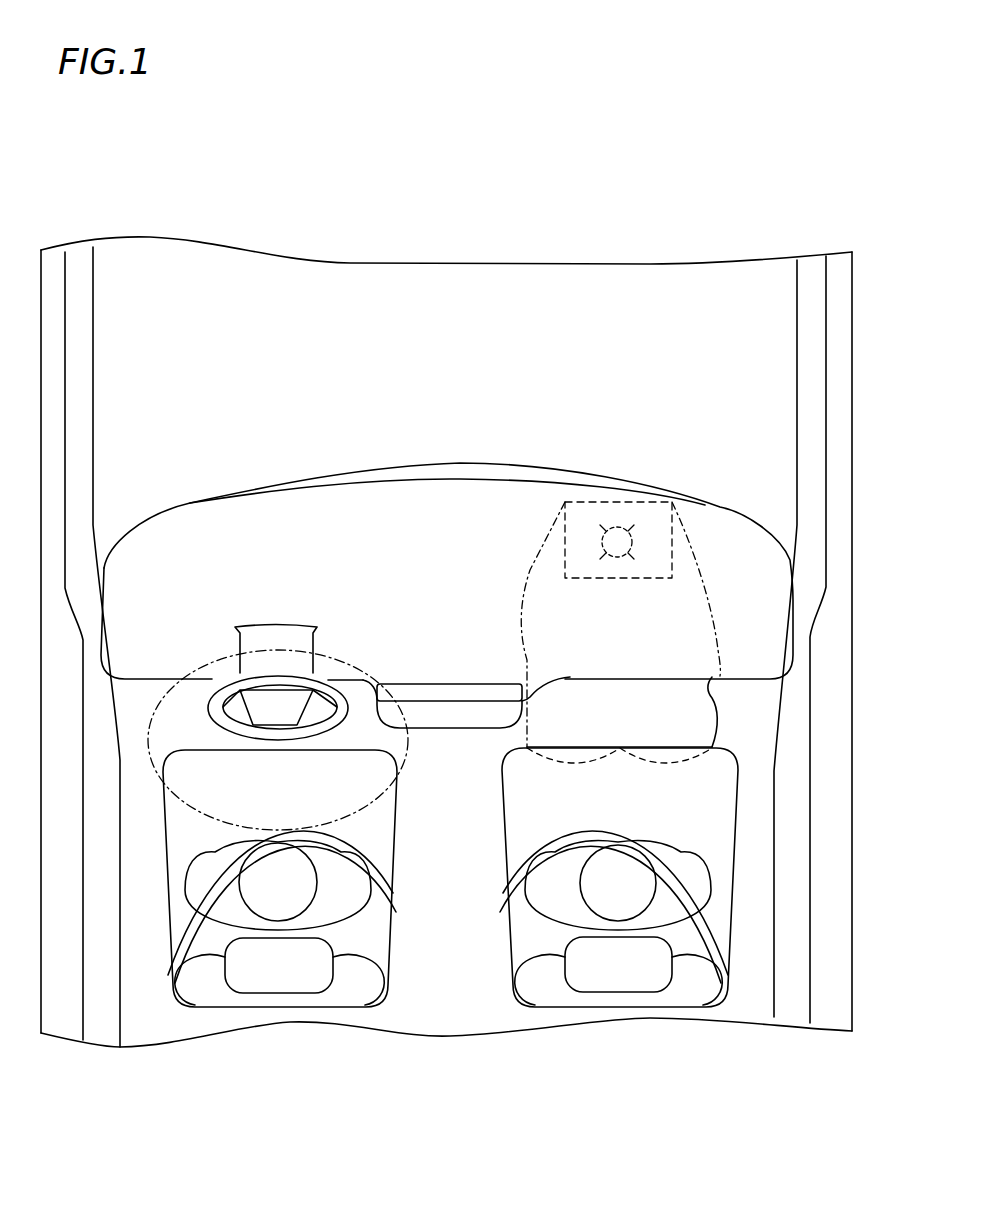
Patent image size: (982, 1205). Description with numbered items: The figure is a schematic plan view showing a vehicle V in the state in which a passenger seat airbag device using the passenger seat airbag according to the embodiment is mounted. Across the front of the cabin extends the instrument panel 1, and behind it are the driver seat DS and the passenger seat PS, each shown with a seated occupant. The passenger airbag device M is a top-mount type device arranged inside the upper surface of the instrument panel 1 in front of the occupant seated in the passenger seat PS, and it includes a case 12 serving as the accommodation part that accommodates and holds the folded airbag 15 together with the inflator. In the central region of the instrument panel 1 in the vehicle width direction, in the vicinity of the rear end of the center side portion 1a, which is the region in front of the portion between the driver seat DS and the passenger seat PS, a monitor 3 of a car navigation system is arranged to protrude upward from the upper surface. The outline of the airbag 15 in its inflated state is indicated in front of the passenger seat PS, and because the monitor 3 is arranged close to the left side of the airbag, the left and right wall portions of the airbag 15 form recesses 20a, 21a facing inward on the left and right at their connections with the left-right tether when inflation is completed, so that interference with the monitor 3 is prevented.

The vehicle V is at (853, 236).
The instrument panel 1 is at (452, 502).
The center side portion 1a is at (462, 717).
The monitor 3 is at (448, 682).
The case 12 is at (640, 572).
The passenger airbag device M is at (620, 486).
The passenger seat airbag 15 is at (708, 548).
The recess 20a is at (530, 672).
The recess 21a is at (714, 686).
The driver seat DS is at (200, 1012).
The passenger seat PS is at (740, 1012).